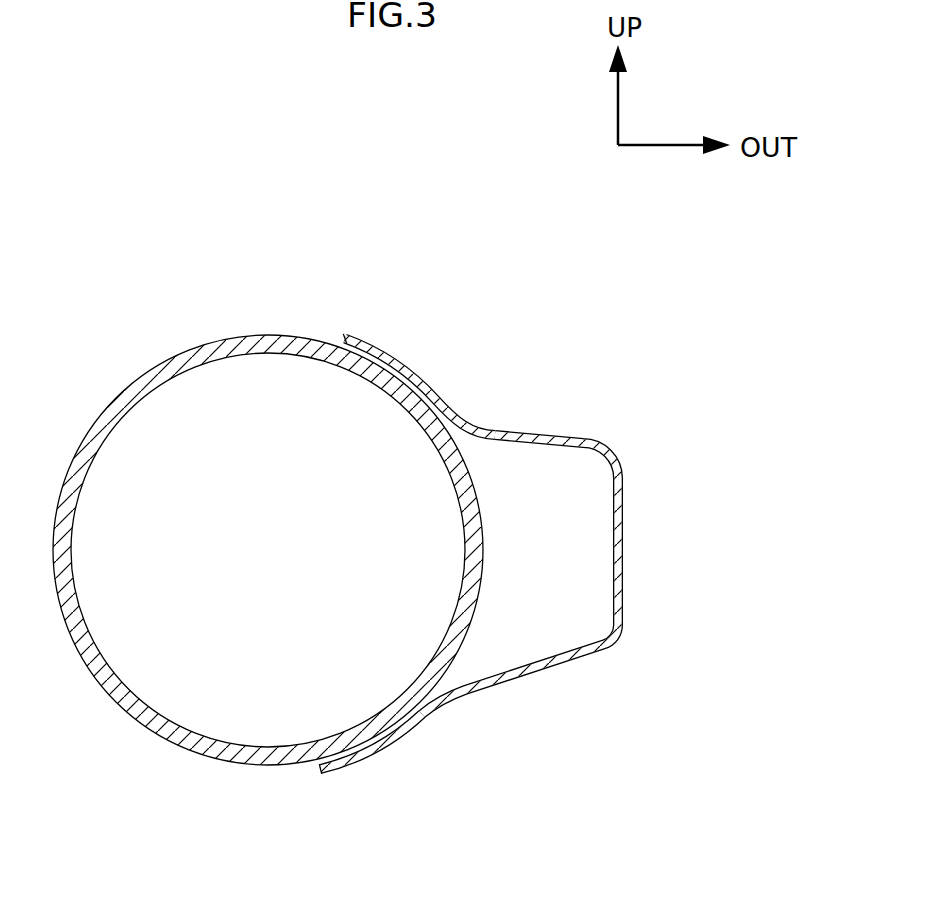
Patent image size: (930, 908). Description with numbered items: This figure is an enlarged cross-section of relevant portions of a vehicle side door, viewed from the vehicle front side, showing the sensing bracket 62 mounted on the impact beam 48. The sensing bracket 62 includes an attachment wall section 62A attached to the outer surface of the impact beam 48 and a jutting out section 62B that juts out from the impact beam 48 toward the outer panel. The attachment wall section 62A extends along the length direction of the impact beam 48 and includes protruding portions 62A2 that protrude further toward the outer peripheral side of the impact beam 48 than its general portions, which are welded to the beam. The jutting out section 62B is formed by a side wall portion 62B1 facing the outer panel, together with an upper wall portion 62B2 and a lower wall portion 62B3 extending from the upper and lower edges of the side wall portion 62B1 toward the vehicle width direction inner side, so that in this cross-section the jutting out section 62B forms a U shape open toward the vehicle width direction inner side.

The impact beam 48 is at (200, 348).
The sensing bracket 62 is at (566, 570).
The attachment wall section 62A is at (438, 570).
The protruding portions 62A2 is at (393, 348).
The jutting out section 62B is at (617, 546).
The side wall portion 62B1 is at (622, 600).
The upper wall portion 62B2 is at (543, 432).
The lower wall portion 62B3 is at (563, 665).